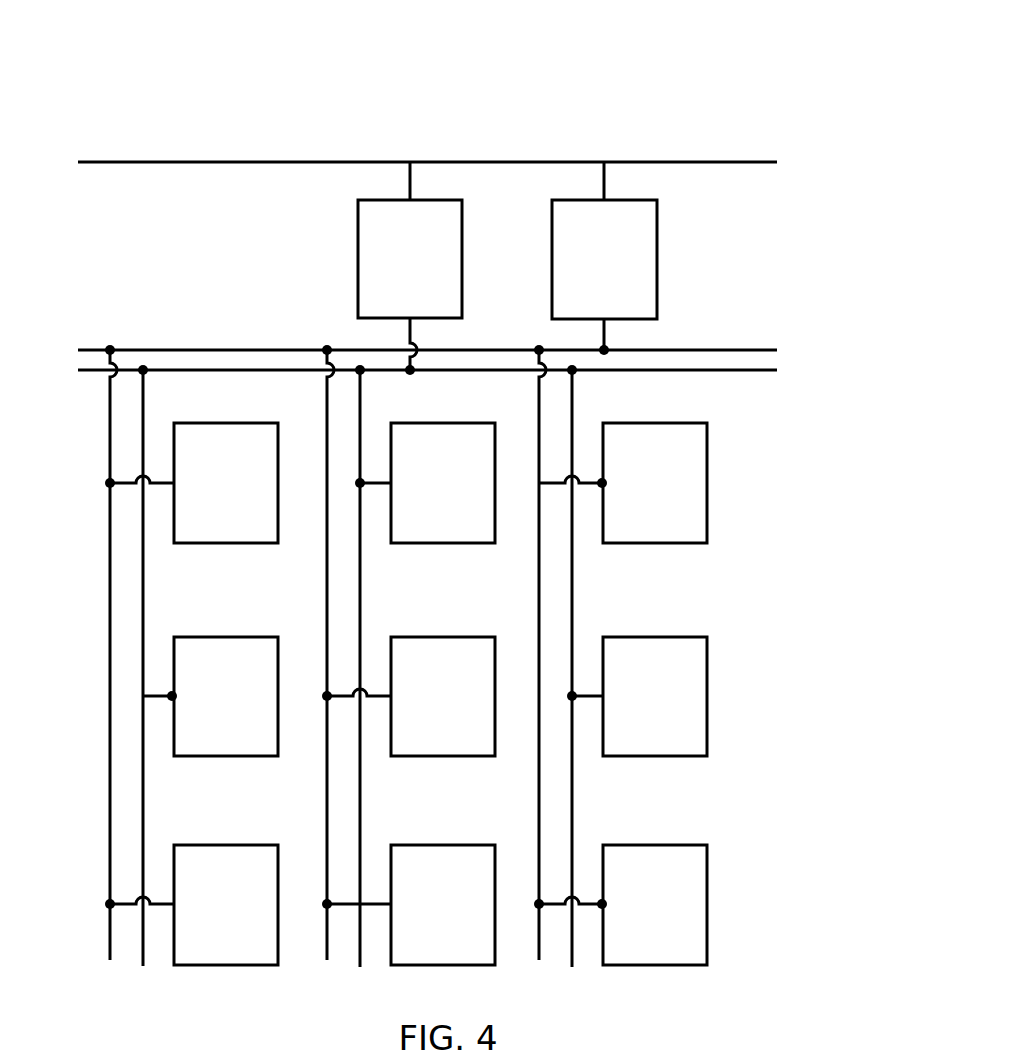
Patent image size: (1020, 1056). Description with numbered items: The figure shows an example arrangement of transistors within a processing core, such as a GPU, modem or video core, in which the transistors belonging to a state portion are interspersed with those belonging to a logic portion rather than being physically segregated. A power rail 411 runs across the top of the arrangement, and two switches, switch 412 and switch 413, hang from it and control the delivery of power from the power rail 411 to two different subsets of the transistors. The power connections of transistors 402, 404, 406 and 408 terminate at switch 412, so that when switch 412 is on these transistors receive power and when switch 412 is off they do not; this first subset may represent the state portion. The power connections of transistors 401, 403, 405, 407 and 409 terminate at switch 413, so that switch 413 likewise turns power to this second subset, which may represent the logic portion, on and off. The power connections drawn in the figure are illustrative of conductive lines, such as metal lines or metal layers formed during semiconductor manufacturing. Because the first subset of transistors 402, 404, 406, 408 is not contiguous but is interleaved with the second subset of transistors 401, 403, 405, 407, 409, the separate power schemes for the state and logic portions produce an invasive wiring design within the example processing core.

The transistor 401 is at (201, 497).
The transistor 402 is at (201, 710).
The transistor 403 is at (201, 918).
The transistor 404 is at (418, 497).
The transistor 405 is at (418, 710).
The transistor 406 is at (418, 918).
The transistor 407 is at (630, 497).
The transistor 408 is at (630, 710).
The transistor 409 is at (630, 918).
The power rail 411 is at (681, 123).
The switch 412 is at (385, 274).
The switch 413 is at (579, 274).